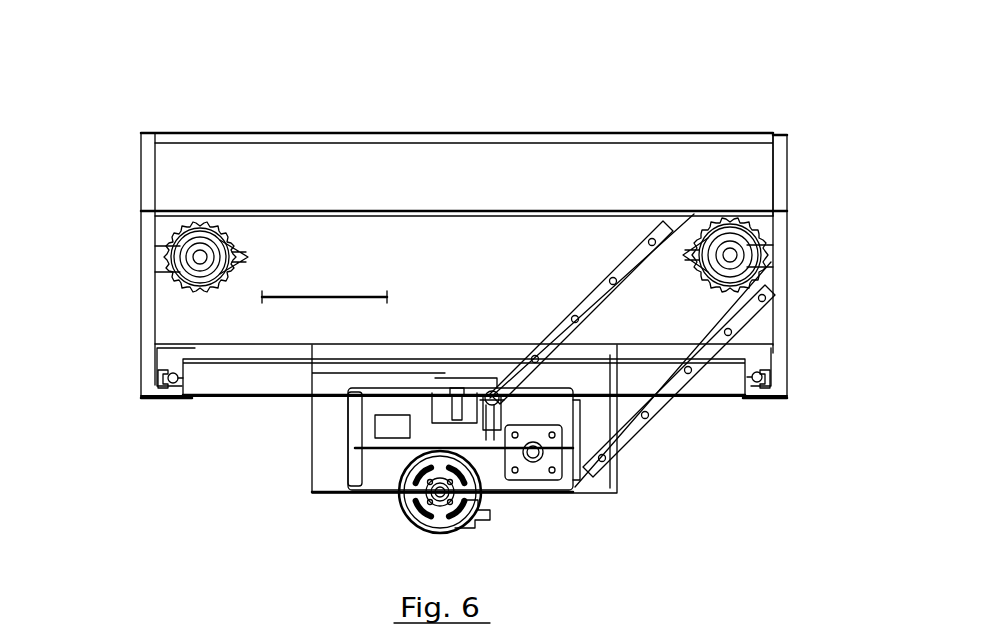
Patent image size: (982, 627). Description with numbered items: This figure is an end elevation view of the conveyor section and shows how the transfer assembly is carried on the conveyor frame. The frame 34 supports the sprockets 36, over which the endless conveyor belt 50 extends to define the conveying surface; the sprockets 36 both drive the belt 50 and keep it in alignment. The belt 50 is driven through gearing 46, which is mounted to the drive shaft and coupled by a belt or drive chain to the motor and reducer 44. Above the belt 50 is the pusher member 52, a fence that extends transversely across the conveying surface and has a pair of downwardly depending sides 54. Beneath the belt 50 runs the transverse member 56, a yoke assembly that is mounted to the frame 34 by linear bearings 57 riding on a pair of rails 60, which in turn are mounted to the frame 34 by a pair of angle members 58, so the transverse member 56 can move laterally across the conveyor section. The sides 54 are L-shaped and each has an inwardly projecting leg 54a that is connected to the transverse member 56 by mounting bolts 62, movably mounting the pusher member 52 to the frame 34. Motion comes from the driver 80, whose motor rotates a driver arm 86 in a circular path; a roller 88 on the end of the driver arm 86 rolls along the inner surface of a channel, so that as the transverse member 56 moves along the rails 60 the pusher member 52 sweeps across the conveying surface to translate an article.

The pusher member 52 is at (486, 128).
The gearing 46 is at (760, 228).
The sprockets 36 is at (160, 252).
The sides 54 is at (143, 282).
The frame 34 is at (140, 319).
The conveyor belt 50 is at (337, 294).
The driver arm 86 is at (430, 410).
The roller 88 is at (490, 395).
The angle members 58 is at (155, 377).
The inwardly projecting leg 54a is at (143, 400).
The linear bearings 57 is at (165, 388).
The rails 60 is at (172, 388).
The mounting bolts 62 is at (197, 410).
The transverse member 56 is at (228, 410).
The driver 80 is at (337, 432).
The motor and reducer 44 is at (544, 525).